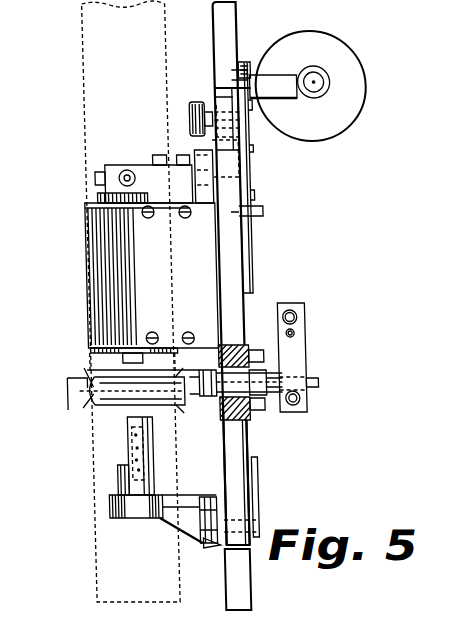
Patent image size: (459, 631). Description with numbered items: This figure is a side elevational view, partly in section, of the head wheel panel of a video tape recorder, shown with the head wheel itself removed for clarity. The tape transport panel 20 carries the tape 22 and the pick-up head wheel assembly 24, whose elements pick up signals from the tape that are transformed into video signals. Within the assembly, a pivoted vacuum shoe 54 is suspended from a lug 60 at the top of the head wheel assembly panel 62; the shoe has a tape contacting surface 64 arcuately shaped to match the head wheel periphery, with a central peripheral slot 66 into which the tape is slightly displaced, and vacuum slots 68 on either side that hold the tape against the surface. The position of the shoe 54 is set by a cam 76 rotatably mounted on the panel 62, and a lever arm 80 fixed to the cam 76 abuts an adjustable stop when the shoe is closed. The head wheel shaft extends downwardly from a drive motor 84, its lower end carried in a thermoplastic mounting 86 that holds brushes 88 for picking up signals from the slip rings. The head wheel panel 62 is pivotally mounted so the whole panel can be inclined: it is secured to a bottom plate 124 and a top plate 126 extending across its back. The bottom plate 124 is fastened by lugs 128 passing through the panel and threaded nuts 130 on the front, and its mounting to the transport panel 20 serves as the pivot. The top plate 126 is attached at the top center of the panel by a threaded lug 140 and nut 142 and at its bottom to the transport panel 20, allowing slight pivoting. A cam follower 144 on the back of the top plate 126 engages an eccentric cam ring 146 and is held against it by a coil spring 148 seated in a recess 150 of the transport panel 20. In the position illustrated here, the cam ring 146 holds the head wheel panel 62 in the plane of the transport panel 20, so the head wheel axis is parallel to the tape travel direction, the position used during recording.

The tape transport panel 20 is at (225, 20).
The tape 22 is at (80, 126).
The pick-up head wheel assembly 24 is at (254, 298).
The vacuum shoe 54 is at (66, 386).
The lug 60 is at (246, 162).
The head wheel assembly panel 62 is at (227, 447).
The tape contacting surface 64 is at (98, 410).
The central peripheral slot 66 is at (72, 408).
The vacuum slots 68 is at (82, 375).
The cam 76 is at (190, 412).
The lever arm 80 is at (287, 350).
The drive motor 84 is at (80, 242).
The thermoplastic mounting 86 is at (141, 480).
The brushes 88 is at (119, 440).
The bottom plate 124 is at (247, 503).
The top plate 126 is at (247, 238).
The lugs 128 is at (247, 522).
The threaded nuts 130 is at (189, 547).
The threaded lug 140 is at (241, 117).
The nut 142 is at (190, 103).
The cam follower 144 is at (268, 77).
The eccentric cam ring 146 is at (333, 79).
The coil spring 148 is at (239, 74).
The recess 150 is at (234, 72).